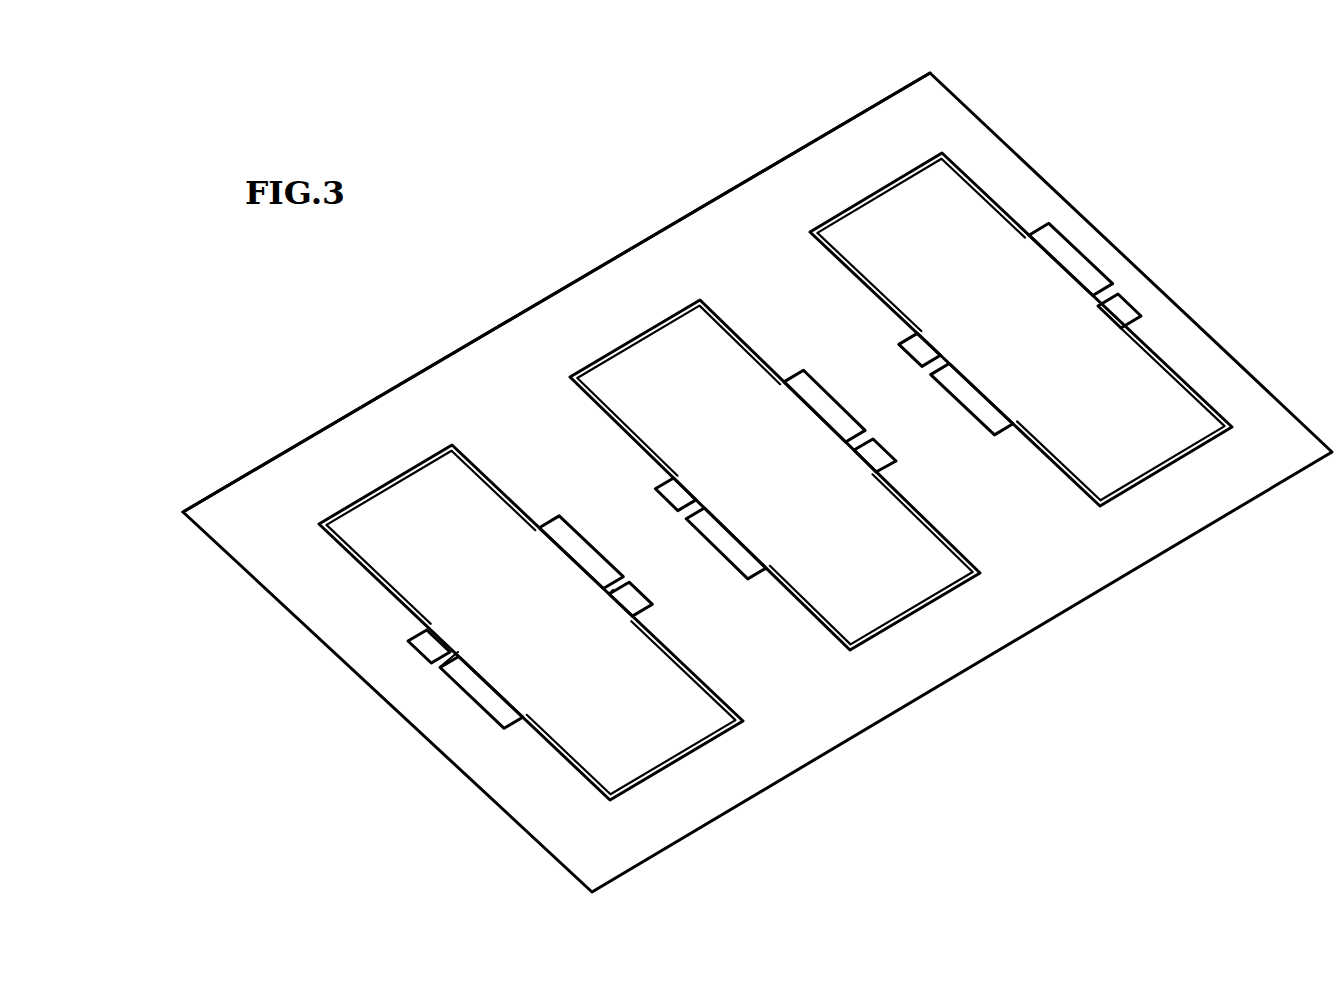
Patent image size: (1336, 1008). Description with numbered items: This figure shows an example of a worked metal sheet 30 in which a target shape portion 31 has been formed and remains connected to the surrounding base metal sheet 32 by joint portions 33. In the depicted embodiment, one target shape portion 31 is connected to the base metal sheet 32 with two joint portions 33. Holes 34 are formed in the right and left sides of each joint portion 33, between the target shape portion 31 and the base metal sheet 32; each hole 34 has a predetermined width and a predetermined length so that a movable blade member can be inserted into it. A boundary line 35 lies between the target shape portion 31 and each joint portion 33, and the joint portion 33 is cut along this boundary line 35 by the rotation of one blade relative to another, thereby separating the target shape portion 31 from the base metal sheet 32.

The metal sheet 30 is at (257, 462).
The target shape portion 31 is at (873, 230).
The base metal sheet 32 is at (547, 302).
The joint portion 33 is at (1110, 282).
The hole 34 is at (560, 518).
The boundary line 35 is at (600, 600).